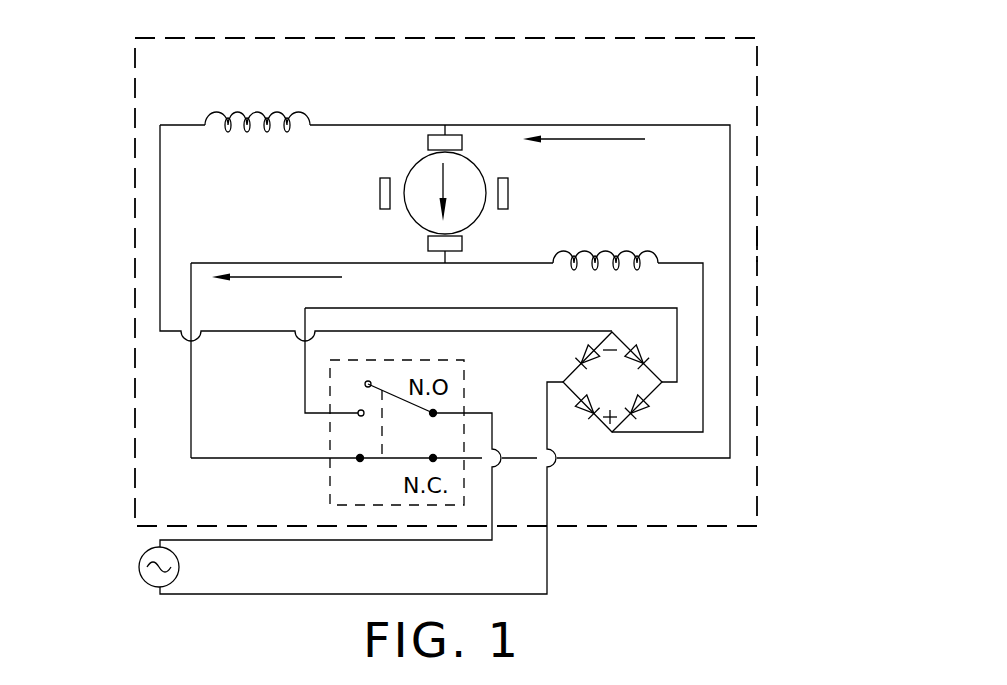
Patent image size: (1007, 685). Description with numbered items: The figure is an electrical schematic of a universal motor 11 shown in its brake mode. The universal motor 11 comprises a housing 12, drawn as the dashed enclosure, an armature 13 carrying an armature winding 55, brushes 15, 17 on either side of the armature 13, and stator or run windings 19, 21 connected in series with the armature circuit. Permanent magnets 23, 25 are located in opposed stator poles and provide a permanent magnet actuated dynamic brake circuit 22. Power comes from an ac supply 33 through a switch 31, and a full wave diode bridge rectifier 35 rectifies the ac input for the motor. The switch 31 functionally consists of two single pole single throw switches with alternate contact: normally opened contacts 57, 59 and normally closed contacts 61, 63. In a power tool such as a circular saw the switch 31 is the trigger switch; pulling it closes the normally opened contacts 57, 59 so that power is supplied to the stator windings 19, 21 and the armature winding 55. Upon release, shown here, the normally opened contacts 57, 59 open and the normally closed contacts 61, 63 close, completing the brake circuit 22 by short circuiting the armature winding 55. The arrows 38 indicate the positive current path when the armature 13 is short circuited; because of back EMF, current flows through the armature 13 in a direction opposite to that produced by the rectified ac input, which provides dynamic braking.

The universal motor 11 is at (775, 102).
The housing 12 is at (757, 247).
The armature 13 is at (413, 222).
The brush 15 is at (447, 135).
The brush 17 is at (462, 242).
The stator winding 19 is at (237, 112).
The stator winding 21 is at (600, 253).
The dynamic brake circuit 22 is at (193, 382).
The permanent magnet 23 is at (378, 193).
The permanent magnet 25 is at (508, 190).
The switch 31 is at (352, 360).
The ac supply 33 is at (140, 577).
The full wave diode bridge rectifier 35 is at (597, 445).
The arrows 38 is at (443, 197).
The armature winding 55 is at (415, 177).
The normally opened contact 57 is at (357, 415).
The normally opened contact 59 is at (436, 412).
The normally closed contact 61 is at (358, 460).
The normally closed contact 63 is at (448, 437).